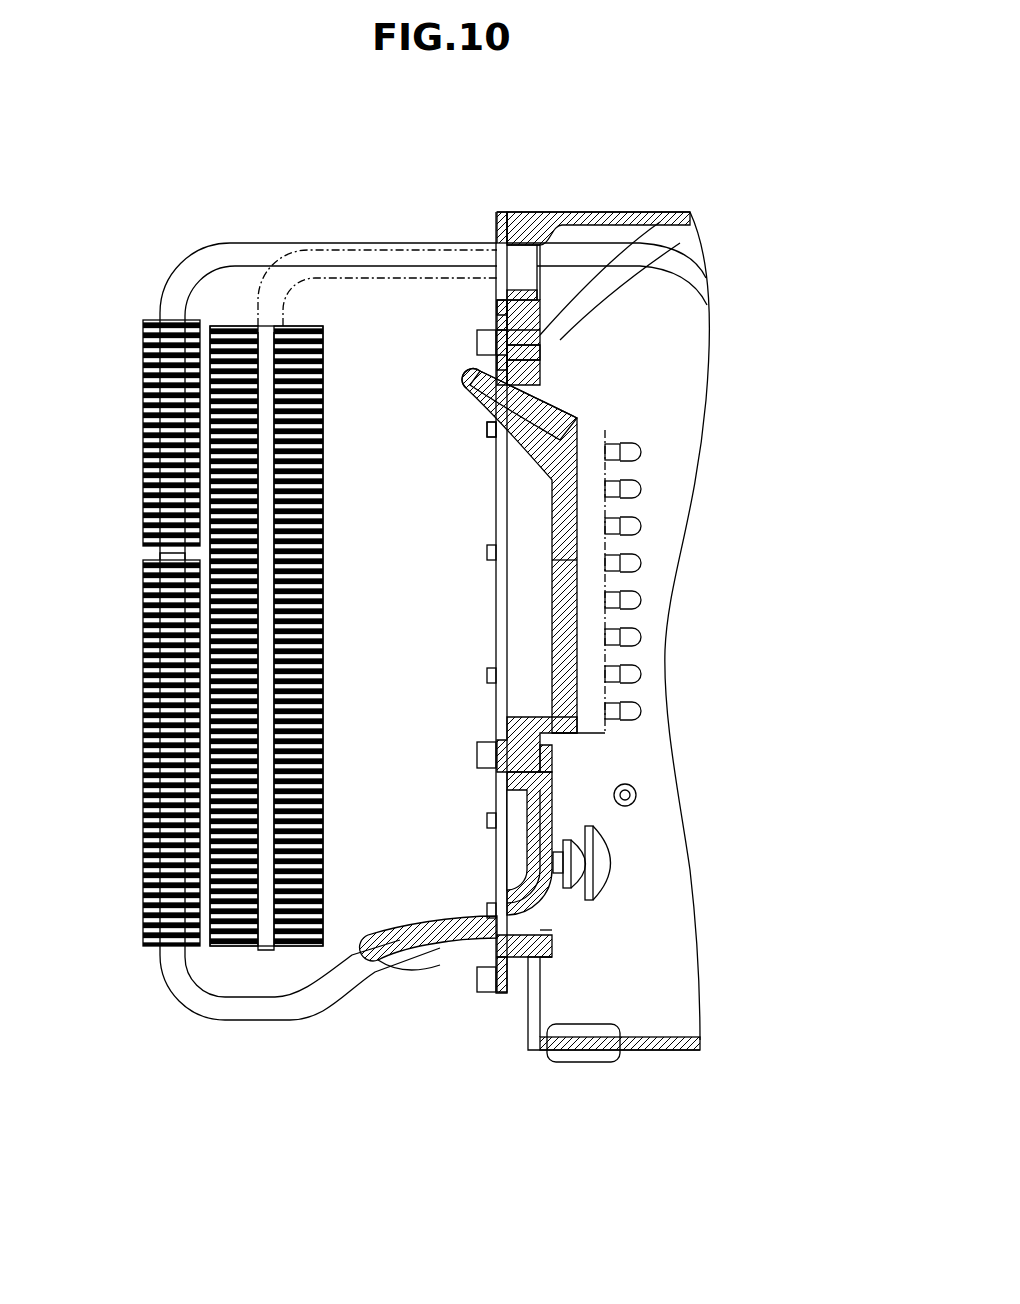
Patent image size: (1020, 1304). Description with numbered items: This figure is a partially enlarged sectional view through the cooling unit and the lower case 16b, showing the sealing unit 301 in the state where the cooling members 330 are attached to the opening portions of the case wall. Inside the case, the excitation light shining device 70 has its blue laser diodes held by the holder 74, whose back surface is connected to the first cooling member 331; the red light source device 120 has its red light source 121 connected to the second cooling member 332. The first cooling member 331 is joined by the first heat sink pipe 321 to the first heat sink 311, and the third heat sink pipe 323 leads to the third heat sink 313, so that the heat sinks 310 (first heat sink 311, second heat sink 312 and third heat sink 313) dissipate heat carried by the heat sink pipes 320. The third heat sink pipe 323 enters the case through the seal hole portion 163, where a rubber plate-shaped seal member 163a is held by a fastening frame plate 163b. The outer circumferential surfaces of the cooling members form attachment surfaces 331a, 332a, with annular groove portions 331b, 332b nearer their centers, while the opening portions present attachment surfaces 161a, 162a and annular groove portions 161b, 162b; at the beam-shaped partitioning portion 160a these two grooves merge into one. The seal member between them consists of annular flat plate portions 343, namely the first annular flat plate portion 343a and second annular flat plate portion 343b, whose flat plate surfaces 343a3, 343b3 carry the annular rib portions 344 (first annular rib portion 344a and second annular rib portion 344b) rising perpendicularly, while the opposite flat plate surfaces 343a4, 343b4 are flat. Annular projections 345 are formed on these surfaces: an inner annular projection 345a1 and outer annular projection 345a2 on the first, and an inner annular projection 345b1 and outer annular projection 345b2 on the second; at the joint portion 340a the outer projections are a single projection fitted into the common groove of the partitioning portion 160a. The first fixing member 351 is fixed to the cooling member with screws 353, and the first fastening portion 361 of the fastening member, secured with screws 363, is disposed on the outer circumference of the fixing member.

The lower case 16b is at (540, 222).
The excitation light shining device 70 is at (648, 440).
The holder 74 is at (575, 578).
The red light source device 120 is at (620, 878).
The red light source 121 is at (553, 860).
The partitioning portion 160a is at (629, 812).
The attachment surface 161a is at (560, 340).
The annular groove portion 161b is at (540, 335).
The attachment surface 162a is at (540, 955).
The annular groove portion 162b is at (532, 985).
The seal hole portion 163 is at (494, 239).
The plate-shaped seal member 163a is at (497, 300).
The fastening frame plate 163b is at (497, 212).
The sealing unit 301 is at (482, 357).
The heat sinks 310 is at (185, 637).
The first heat sink 311 is at (215, 542).
The second heat sink 312 is at (150, 905).
The third heat sink 313 is at (152, 347).
The heat sink pipes 320 is at (293, 588).
The first heat sink pipe 321 is at (262, 302).
The third heat sink pipe 323 is at (252, 255).
The cooling members 330 is at (529, 674).
The first cooling member 331 is at (556, 483).
The attachment surface 331a is at (530, 345).
The annular groove portion 331b is at (540, 358).
The second cooling member 332 is at (540, 815).
The attachment surface 332a is at (545, 962).
The annular groove portion 332b is at (552, 935).
The joint portion 340a is at (494, 745).
The annular flat plate portions 343 is at (564, 725).
The first annular flat plate portion 343a is at (497, 372).
The flat plate surface 343a3 is at (540, 740).
The flat plate surface 343a4 is at (492, 360).
The second annular flat plate portion 343b is at (497, 945).
The flat plate surface 343b3 is at (552, 762).
The flat plate surface 343b4 is at (480, 978).
The annular rib portions 344 is at (569, 641).
The first annular rib portion 344a is at (555, 330).
The second annular rib portion 344b is at (480, 975).
The annular projections 345 is at (584, 632).
The annular projection 345a1 is at (545, 395).
The annular projection 345a2 is at (520, 325).
The annular projection 345b1 is at (477, 922).
The annular projection 345b2 is at (500, 1105).
The first fixing member 351 is at (470, 388).
The screws 353 is at (488, 430).
The first fastening portion 361 is at (492, 330).
The screws 363 is at (477, 338).